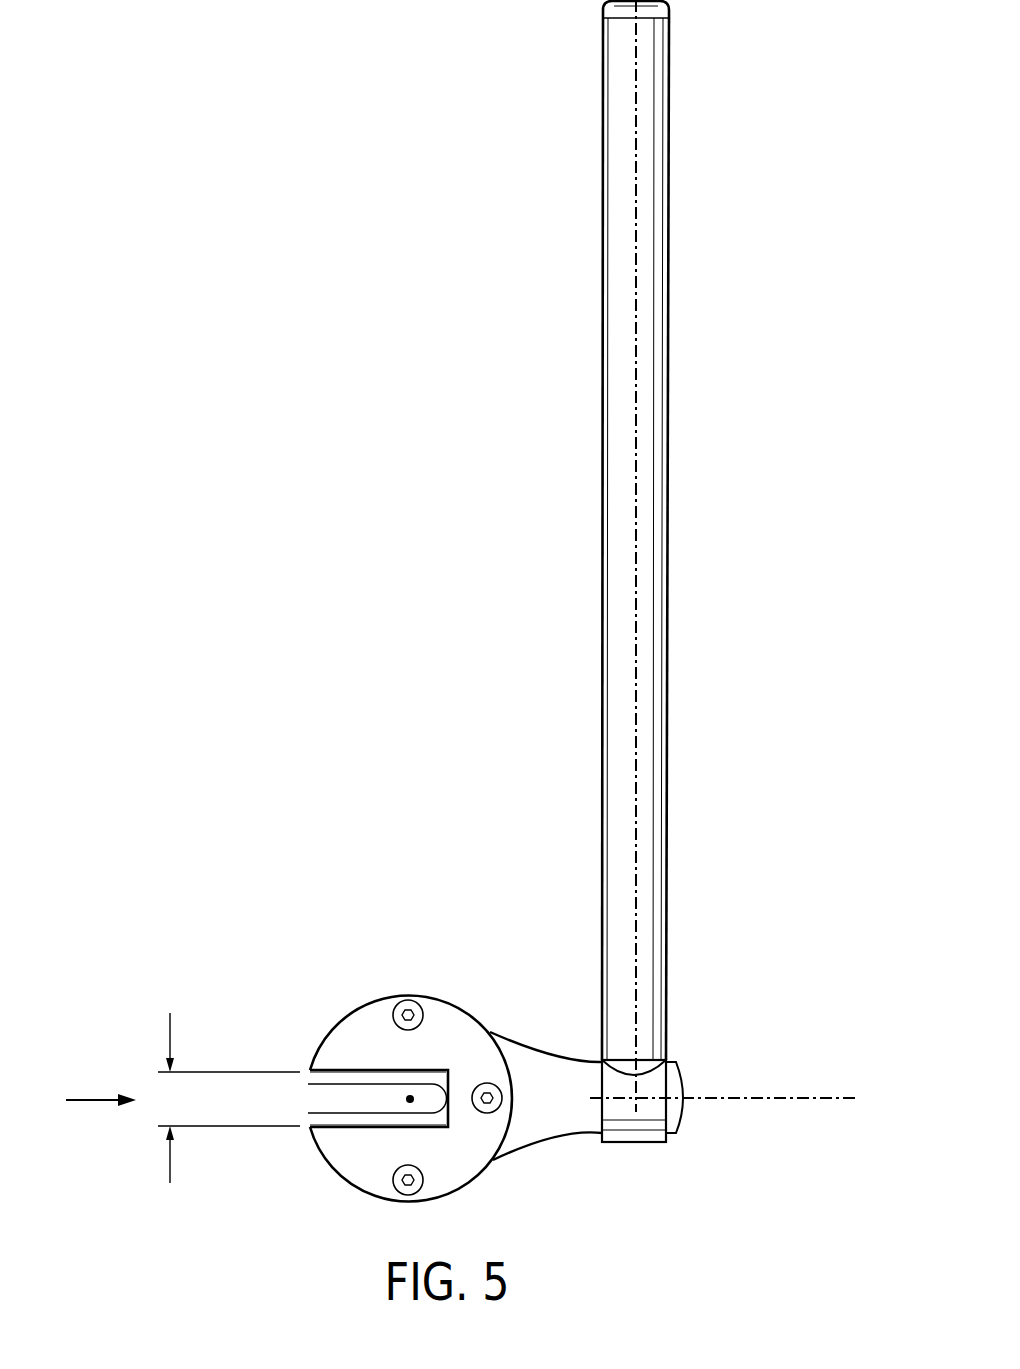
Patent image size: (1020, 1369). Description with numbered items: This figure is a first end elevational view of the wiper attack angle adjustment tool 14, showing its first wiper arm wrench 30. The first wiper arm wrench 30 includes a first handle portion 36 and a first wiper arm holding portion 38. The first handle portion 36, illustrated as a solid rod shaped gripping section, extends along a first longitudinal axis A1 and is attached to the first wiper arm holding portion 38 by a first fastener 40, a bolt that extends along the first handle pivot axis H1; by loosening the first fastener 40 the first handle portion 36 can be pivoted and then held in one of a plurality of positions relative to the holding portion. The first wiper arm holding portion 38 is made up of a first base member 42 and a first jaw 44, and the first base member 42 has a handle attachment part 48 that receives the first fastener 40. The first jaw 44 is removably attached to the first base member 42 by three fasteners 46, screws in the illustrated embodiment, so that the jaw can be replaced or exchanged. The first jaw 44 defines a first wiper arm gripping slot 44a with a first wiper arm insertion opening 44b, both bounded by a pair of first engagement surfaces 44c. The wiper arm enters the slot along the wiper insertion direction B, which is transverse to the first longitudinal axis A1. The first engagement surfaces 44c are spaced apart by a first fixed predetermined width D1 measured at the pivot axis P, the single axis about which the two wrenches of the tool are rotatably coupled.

The wiper attack angle adjustment tool 14 is at (442, 786).
The first wiper arm wrench 30 is at (512, 1187).
The first handle portion 36 is at (603, 478).
The first wiper arm holding portion 38 is at (528, 903).
The first fastener 40 is at (672, 1060).
The first base member 42 is at (535, 1046).
The first jaw 44 is at (370, 996).
The first wiper arm gripping slot 44a is at (366, 1102).
The first wiper arm insertion opening 44b is at (298, 1098).
The first engagement surfaces 44c is at (355, 1076).
The fasteners 46 is at (397, 1022).
The handle attachment part 48 is at (556, 1124).
The pivot axis P is at (411, 1100).
The first longitudinal axis A1 is at (636, 322).
The first handle pivot axis H1 is at (766, 1097).
The wiper insertion direction B is at (89, 1100).
The first fixed predetermined width D1 is at (223, 1098).